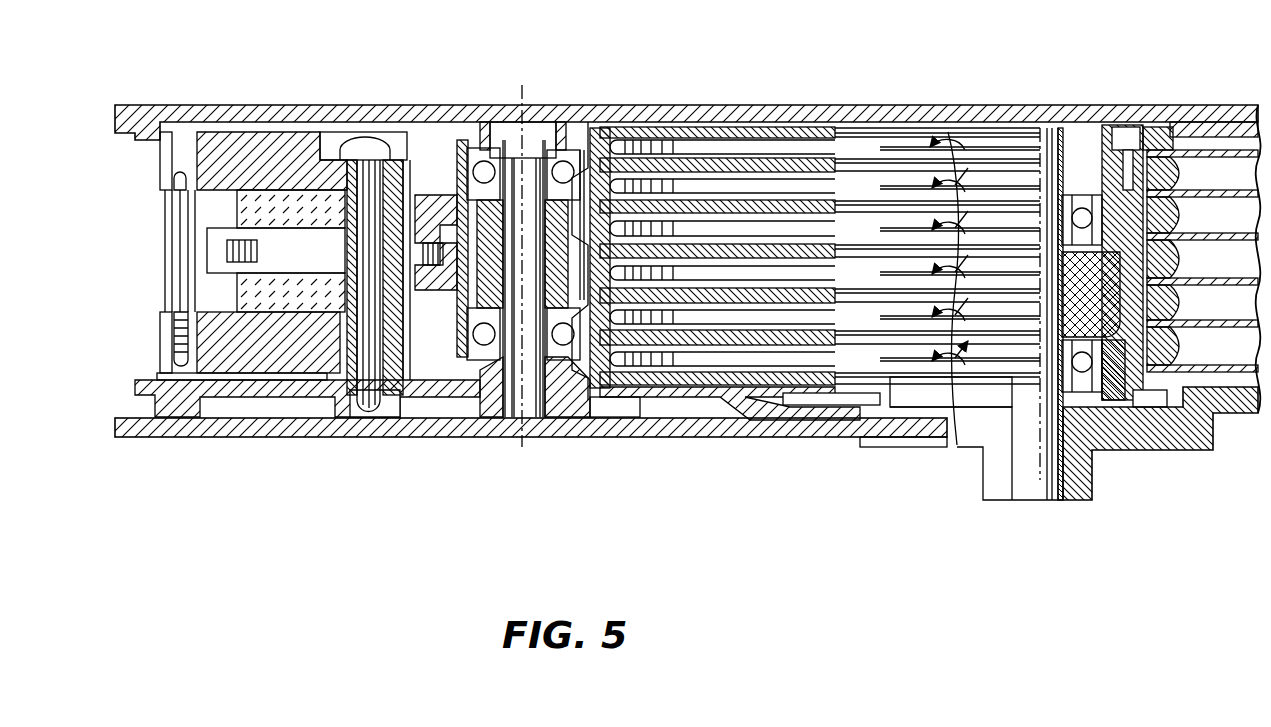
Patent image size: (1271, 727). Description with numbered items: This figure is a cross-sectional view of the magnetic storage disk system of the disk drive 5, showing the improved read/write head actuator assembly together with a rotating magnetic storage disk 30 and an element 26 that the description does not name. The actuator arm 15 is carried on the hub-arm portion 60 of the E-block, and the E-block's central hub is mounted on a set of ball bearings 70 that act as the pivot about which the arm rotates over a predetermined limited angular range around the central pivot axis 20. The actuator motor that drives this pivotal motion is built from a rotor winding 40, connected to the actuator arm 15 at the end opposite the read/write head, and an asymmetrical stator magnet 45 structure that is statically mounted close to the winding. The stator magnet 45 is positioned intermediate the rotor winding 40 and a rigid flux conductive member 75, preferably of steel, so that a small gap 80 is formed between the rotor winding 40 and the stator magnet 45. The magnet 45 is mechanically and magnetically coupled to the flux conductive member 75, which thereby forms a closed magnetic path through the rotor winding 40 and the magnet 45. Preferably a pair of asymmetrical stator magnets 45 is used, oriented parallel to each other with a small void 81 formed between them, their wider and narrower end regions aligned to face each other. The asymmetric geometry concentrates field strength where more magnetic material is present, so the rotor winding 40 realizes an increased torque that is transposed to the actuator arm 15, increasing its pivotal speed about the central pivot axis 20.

The disk drive 5 is at (361, 470).
The actuator arm 15 is at (921, 386).
The central pivot axis 20 is at (512, 88).
The thermal element 26 is at (1100, 309).
The magnetic storage disk 30 is at (762, 370).
The rotor winding 40 is at (222, 250).
The asymmetrical stator magnet 45 is at (234, 206).
The hub-arm portion 60 is at (682, 384).
The ball bearings 70 is at (566, 146).
The flux conductive member 75 is at (244, 128).
The gap 80 is at (234, 221).
The void 81 is at (323, 236).